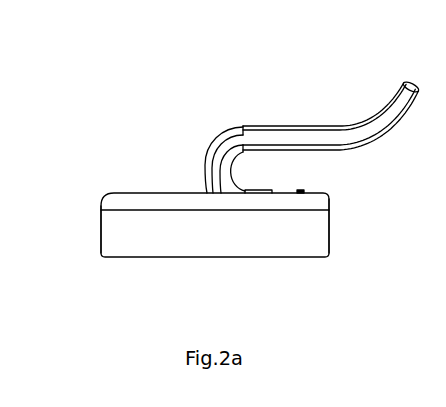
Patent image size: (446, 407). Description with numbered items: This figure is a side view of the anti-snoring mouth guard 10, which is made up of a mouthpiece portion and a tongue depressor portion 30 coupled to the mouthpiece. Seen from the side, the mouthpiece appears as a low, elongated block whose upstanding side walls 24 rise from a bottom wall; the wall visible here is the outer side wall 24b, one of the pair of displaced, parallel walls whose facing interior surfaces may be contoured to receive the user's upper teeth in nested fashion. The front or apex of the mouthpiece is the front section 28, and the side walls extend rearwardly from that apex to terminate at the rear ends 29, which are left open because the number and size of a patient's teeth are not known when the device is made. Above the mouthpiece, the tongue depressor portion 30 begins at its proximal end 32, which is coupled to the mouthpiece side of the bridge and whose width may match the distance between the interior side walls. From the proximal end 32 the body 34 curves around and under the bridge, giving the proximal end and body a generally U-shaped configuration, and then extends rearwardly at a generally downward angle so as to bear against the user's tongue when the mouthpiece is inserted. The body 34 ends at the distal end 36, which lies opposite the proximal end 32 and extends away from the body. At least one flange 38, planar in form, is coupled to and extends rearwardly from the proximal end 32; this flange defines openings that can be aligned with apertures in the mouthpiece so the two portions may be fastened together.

The anti-snoring mouth guard 10 is at (272, 101).
The side walls 24 is at (273, 233).
The outer side wall 24b is at (155, 240).
The front section 28 is at (100, 234).
The rear ends 29 is at (329, 237).
The tongue depressor portion 30 is at (321, 101).
The proximal end 32 is at (262, 190).
The body 34 is at (337, 126).
The distal end 36 is at (412, 82).
The flange 38 is at (324, 193).